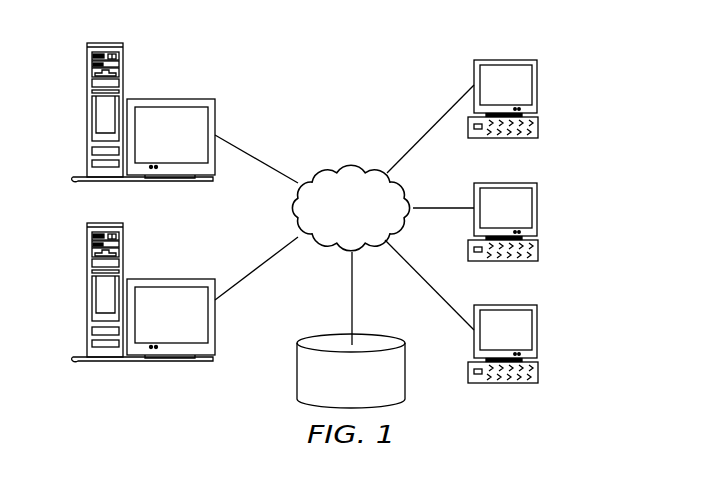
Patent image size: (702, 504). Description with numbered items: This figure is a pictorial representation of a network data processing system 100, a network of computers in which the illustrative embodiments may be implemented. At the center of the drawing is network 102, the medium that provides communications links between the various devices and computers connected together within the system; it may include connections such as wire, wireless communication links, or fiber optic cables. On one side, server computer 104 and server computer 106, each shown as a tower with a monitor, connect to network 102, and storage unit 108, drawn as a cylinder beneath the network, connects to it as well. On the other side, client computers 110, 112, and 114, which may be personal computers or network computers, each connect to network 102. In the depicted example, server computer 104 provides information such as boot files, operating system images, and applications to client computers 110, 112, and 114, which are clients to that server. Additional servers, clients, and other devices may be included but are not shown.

The network data processing system 100 is at (396, 70).
The network 102 is at (325, 164).
The server computer 104 is at (87, 113).
The server computer 106 is at (87, 292).
The storage unit 108 is at (297, 370).
The client computer 110 is at (537, 86).
The client computer 112 is at (536, 209).
The client computer 114 is at (536, 330).